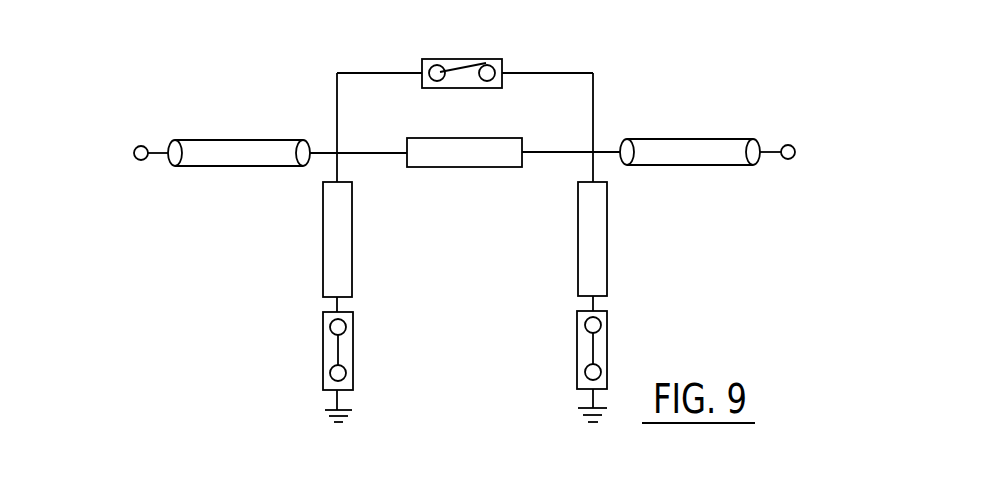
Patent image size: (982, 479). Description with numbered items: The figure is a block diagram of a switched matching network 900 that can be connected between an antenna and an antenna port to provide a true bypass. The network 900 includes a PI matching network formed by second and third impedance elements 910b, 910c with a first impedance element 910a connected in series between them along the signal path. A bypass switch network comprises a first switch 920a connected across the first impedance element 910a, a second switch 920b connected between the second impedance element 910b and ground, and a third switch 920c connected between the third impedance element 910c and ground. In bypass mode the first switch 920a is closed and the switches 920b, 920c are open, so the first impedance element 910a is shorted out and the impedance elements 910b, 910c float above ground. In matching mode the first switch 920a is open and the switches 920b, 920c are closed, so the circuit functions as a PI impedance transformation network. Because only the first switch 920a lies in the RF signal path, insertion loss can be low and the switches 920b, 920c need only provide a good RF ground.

The switched matching network 900 is at (298, 54).
The first impedance element 910a is at (465, 169).
The second impedance element 910b is at (371, 239).
The third impedance element 910c is at (558, 239).
The first switch 920a is at (493, 75).
The second switch 920b is at (358, 336).
The third switch 920c is at (573, 339).